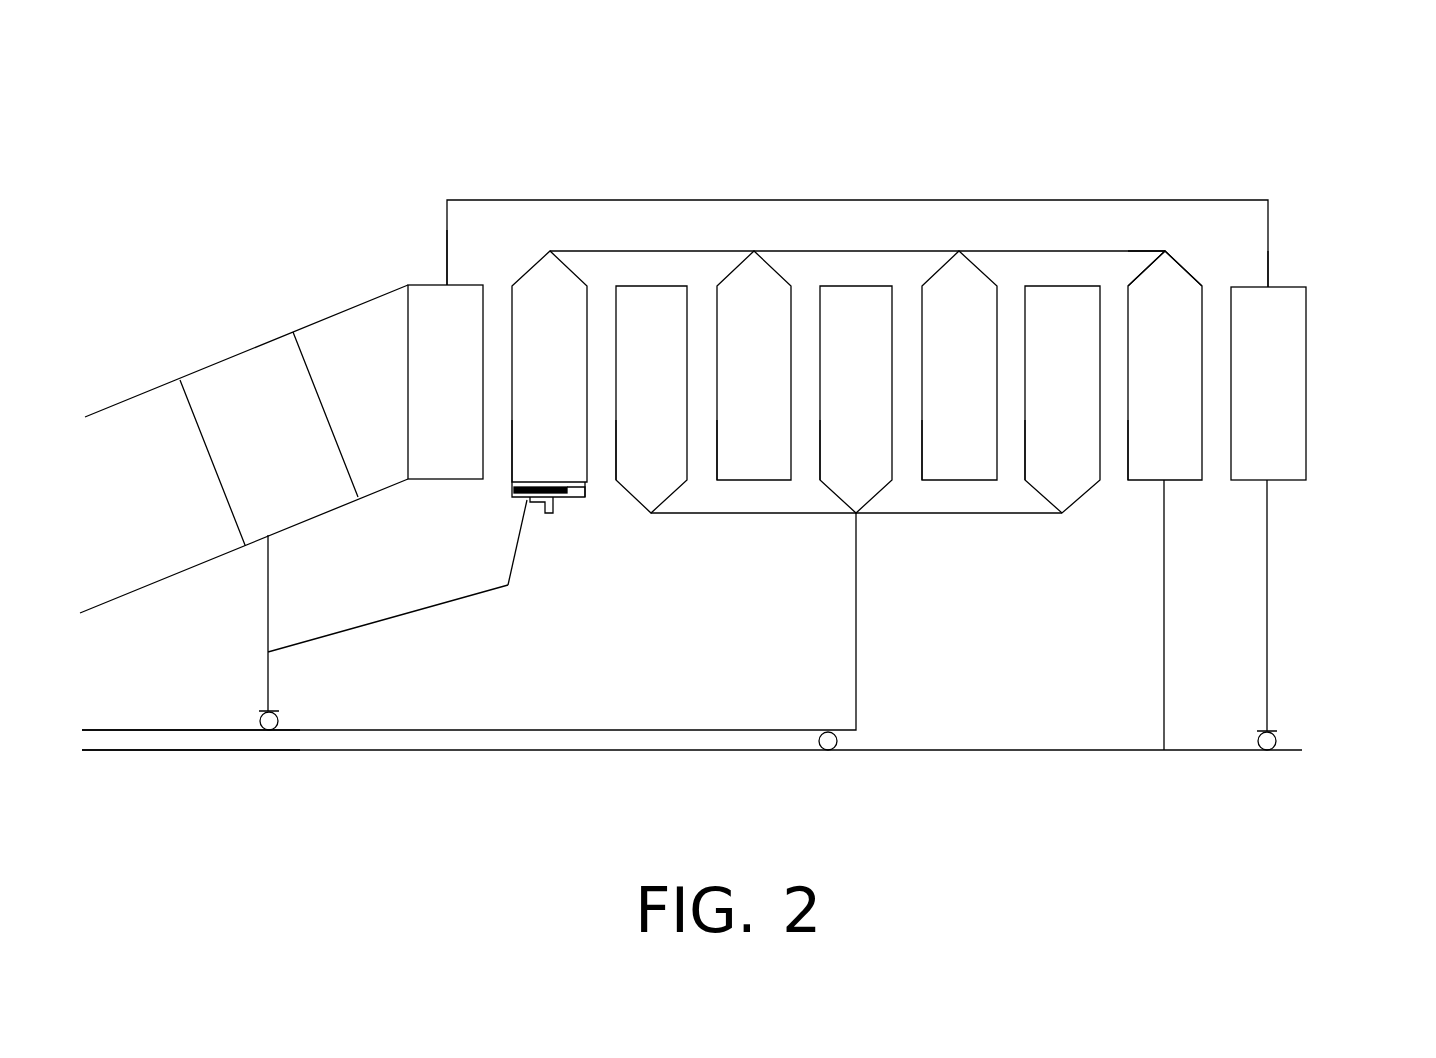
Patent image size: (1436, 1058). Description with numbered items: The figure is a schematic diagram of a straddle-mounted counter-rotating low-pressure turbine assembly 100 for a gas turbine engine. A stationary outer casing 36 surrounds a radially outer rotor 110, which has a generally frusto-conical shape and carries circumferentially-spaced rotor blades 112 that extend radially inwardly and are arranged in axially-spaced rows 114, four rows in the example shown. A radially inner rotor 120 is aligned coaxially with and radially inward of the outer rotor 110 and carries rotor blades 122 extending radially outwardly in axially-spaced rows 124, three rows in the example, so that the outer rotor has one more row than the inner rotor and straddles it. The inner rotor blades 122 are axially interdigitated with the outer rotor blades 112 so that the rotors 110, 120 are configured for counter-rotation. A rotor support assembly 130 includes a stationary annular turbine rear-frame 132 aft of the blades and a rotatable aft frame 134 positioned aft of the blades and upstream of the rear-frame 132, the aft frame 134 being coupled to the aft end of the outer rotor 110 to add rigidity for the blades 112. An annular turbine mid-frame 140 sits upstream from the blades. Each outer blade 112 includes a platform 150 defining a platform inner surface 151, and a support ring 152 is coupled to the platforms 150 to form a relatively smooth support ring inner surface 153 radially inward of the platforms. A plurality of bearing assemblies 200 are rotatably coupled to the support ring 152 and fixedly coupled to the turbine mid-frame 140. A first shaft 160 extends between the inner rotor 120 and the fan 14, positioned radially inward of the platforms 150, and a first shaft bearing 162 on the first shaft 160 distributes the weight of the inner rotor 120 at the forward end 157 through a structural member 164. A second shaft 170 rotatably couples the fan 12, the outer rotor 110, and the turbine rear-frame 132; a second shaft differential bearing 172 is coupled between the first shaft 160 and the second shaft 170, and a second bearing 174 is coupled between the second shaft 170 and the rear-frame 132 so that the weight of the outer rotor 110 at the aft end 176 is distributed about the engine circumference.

The low-pressure turbine assembly 100 is at (1058, 120).
The stationary outer casing 36 is at (785, 200).
The forward end 157 is at (516, 242).
The outer rotor 110 is at (820, 250).
The aft end 176 is at (1142, 228).
The rotor support assembly 130 is at (1298, 253).
The rotatable aft frame 134 is at (1172, 278).
The turbine rear-frame 132 is at (1307, 382).
The outer rotor blades 112 is at (576, 366).
The outer rotor blade rows 114 is at (576, 451).
The inner rotor blades 122 is at (678, 366).
The inner rotor blade rows 124 is at (678, 451).
The inner rotor 120 is at (960, 515).
The turbine mid-frame 140 is at (250, 380).
The platform 150 is at (527, 483).
The platform inner surface 151 is at (568, 493).
The support ring 152 is at (513, 500).
The support ring inner surface 153 is at (533, 502).
The bearing assemblies 200 is at (578, 545).
The structural member 164 is at (268, 610).
The first shaft bearing 162 is at (260, 720).
The first shaft 160 is at (645, 728).
The fan 14 is at (191, 715).
The second shaft differential bearing 172 is at (838, 741).
The second shaft 170 is at (357, 750).
The fan 12 is at (191, 769).
The second bearing 174 is at (1277, 740).